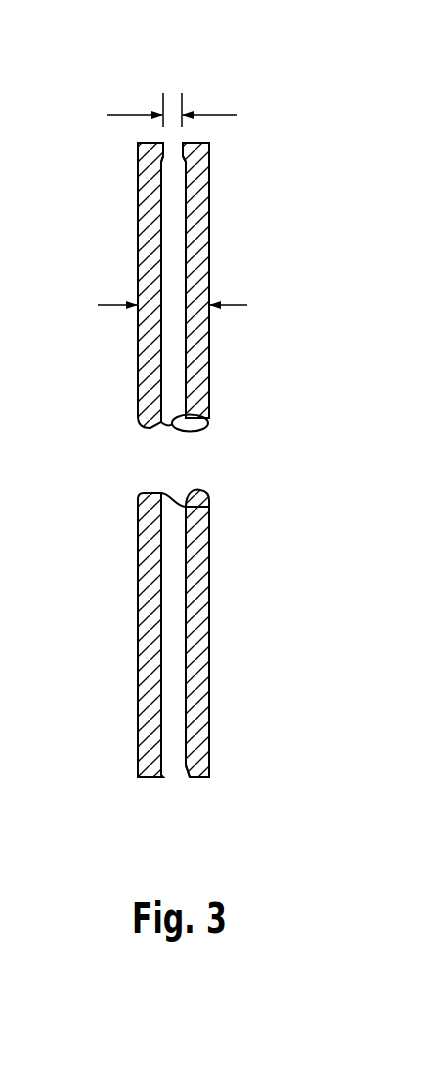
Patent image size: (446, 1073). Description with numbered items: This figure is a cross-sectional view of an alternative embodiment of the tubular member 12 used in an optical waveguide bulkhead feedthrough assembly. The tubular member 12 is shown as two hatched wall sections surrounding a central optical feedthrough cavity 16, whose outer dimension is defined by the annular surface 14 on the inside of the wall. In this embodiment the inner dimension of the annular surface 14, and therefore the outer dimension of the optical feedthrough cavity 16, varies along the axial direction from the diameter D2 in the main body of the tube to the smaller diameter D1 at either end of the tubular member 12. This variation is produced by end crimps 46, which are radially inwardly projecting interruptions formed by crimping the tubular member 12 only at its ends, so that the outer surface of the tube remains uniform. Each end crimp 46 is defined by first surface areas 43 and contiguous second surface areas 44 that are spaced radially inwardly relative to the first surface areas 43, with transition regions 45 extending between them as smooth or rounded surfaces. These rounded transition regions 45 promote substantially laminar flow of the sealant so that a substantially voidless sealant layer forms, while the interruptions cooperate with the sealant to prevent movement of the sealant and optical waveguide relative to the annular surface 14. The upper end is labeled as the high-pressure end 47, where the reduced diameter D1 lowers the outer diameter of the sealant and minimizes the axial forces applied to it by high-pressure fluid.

The tubular member 12 is at (108, 444).
The annular surface 14 is at (160, 342).
The optical feedthrough cavity 16 is at (173, 260).
The first surface areas 43 is at (154, 223).
The second surface areas 44 is at (162, 146).
The transition regions 45 is at (162, 157).
The end crimps 46 is at (172, 153).
The high-pressure end 47 is at (224, 89).
The diameter D1 is at (153, 117).
The diameter D2 is at (192, 305).